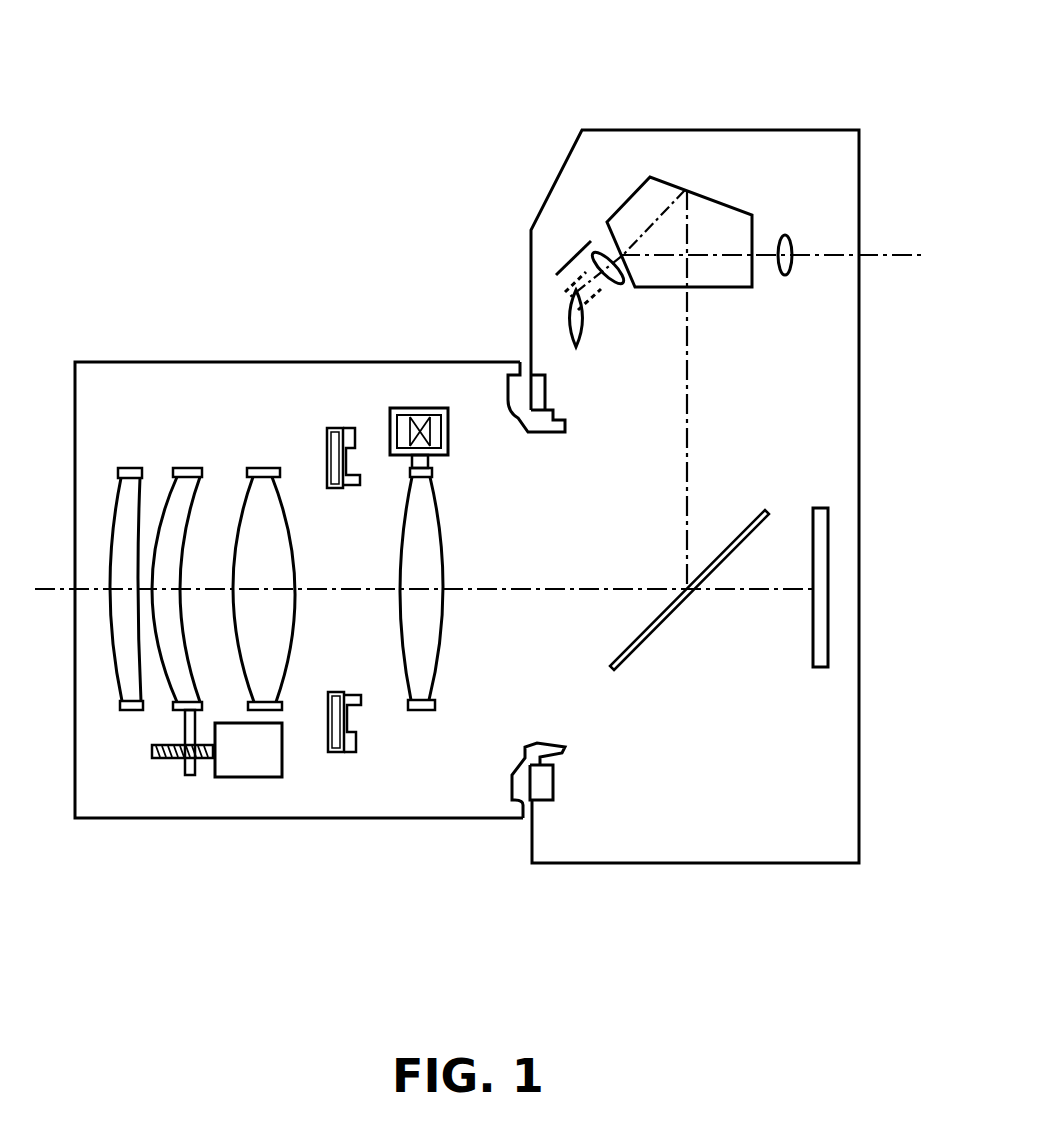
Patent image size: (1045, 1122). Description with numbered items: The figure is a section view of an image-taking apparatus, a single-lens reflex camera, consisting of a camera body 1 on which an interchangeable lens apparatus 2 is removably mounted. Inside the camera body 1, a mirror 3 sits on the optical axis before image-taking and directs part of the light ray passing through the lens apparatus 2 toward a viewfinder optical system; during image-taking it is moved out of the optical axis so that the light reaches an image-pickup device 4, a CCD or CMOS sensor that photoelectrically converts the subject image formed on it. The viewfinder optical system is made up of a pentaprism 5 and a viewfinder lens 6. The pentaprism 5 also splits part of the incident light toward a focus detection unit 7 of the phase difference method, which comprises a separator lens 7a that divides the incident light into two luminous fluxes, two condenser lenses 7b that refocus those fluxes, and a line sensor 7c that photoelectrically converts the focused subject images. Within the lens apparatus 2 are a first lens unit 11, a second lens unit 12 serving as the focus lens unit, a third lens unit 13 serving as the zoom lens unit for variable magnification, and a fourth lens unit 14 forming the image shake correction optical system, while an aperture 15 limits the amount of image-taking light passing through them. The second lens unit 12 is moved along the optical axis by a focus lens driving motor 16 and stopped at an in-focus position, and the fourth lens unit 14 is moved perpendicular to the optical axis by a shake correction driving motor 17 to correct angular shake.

The camera body 1 is at (820, 150).
The interchangeable lens apparatus 2 is at (295, 395).
The mirror 3 is at (643, 650).
The image-pickup device 4 is at (828, 543).
The pentaprism 5 is at (707, 197).
The viewfinder lens 6 is at (793, 243).
The focus detection unit 7 is at (566, 248).
The separator lens 7a is at (620, 275).
The condenser lenses 7b is at (578, 283).
The line sensor 7c is at (576, 330).
The first lens unit 11 is at (128, 480).
The second lens unit 12 is at (178, 677).
The third lens unit 13 is at (287, 677).
The fourth lens unit 14 is at (410, 695).
The aperture 15 is at (337, 755).
The focus lens driving motor 16 is at (240, 760).
The shake correction driving motor 17 is at (402, 415).